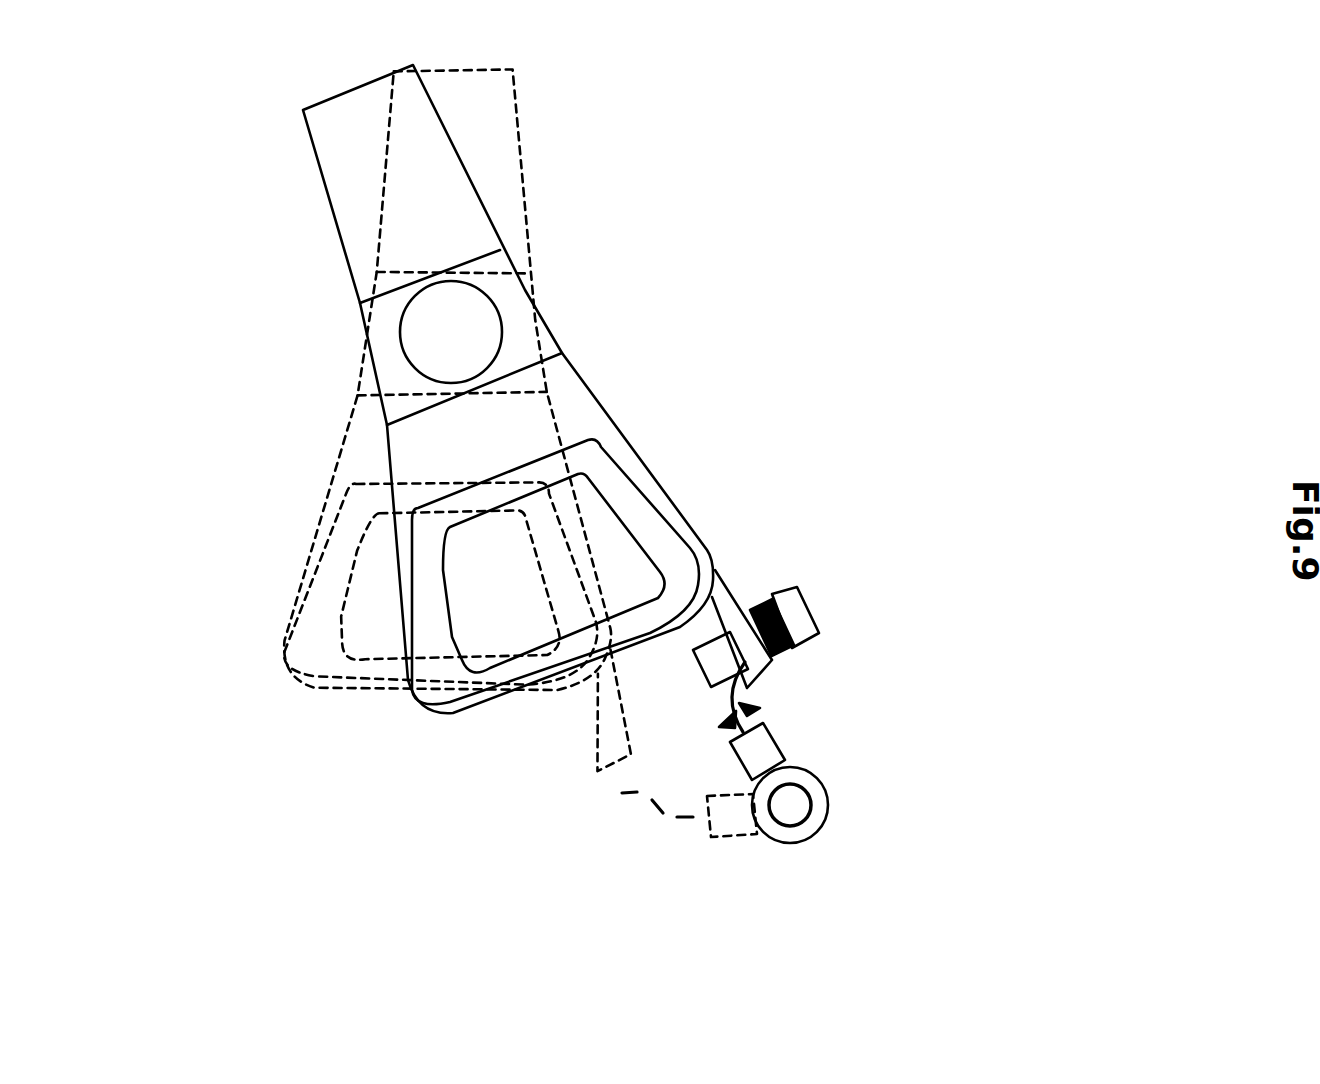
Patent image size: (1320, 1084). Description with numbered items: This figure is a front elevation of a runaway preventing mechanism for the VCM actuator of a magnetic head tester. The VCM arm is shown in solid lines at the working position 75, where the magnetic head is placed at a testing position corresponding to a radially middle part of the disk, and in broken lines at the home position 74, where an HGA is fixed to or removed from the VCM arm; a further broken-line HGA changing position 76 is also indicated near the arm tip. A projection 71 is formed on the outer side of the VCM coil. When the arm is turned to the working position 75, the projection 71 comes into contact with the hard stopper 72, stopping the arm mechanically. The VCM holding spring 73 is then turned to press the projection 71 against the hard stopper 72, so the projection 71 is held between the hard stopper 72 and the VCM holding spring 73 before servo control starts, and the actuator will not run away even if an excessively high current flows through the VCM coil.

The projection 71 is at (752, 598).
The hard stopper 72 is at (792, 660).
The VCM holding spring 73 is at (745, 690).
The home position 74 is at (278, 675).
The working position 75 is at (677, 505).
The HGA changing position 76 is at (650, 825).